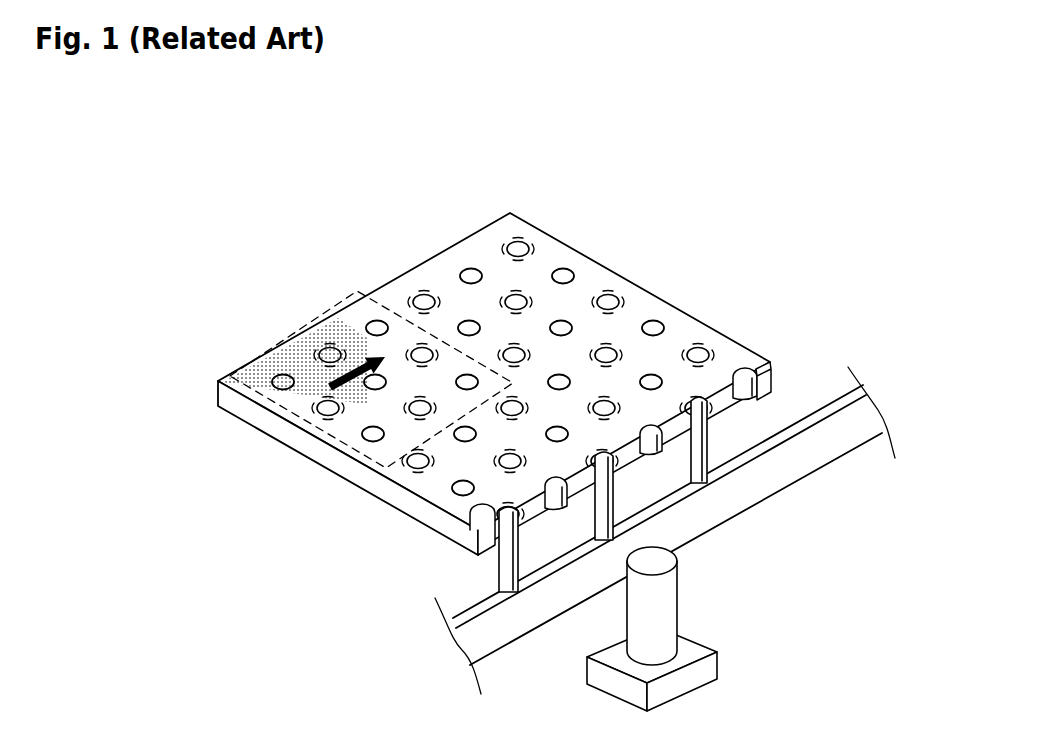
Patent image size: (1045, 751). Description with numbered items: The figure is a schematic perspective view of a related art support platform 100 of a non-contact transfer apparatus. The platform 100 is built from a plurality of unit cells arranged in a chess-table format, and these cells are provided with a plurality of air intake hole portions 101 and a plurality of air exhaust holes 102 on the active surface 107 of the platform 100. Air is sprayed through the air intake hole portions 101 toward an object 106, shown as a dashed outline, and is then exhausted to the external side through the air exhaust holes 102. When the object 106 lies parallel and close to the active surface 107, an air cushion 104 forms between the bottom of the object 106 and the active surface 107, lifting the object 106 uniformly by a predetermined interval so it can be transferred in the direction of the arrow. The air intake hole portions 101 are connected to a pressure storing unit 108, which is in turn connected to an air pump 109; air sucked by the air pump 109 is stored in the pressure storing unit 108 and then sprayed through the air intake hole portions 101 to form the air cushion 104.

The support platform 100 is at (533, 419).
The air intake hole portions 101 is at (485, 377).
The air exhaust holes 102 is at (467, 270).
The air cushion 104 is at (226, 380).
The object 106 is at (371, 374).
The active surface 107 is at (553, 243).
The pressure storing unit 108 is at (853, 436).
The air pump 109 is at (716, 645).